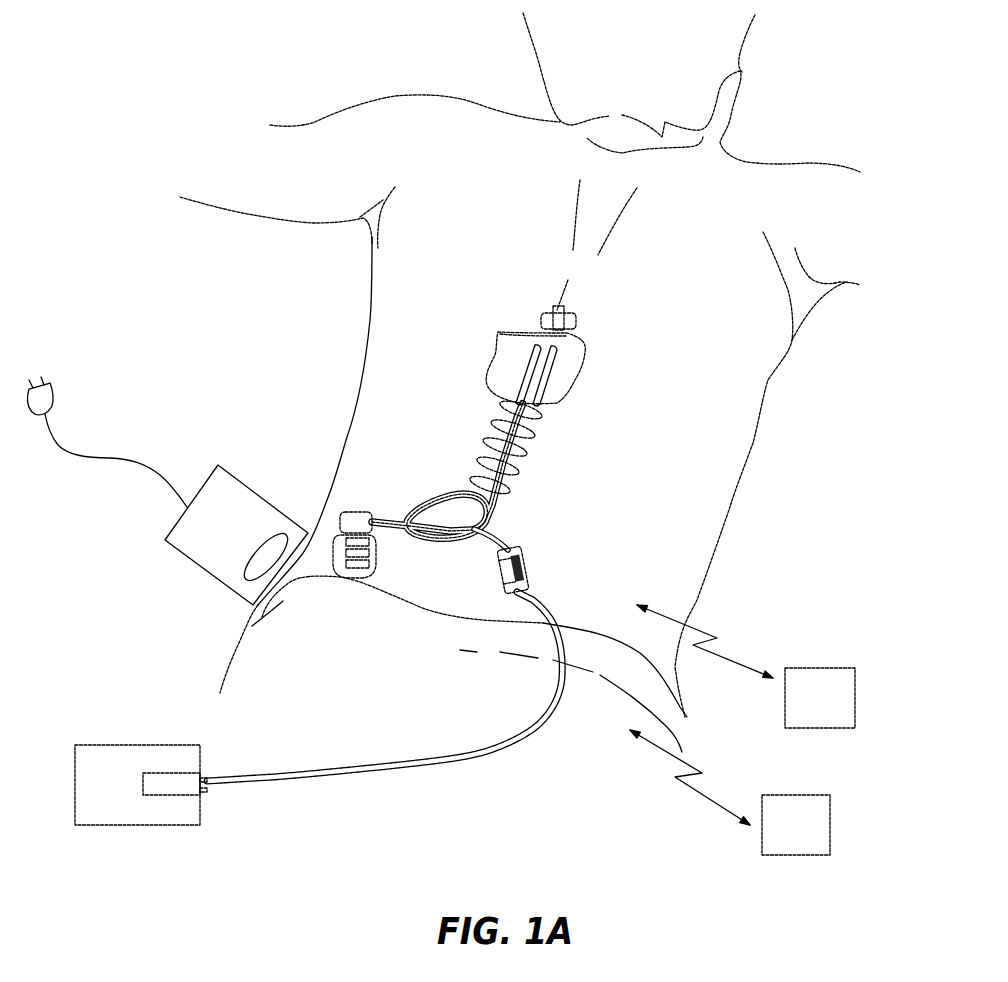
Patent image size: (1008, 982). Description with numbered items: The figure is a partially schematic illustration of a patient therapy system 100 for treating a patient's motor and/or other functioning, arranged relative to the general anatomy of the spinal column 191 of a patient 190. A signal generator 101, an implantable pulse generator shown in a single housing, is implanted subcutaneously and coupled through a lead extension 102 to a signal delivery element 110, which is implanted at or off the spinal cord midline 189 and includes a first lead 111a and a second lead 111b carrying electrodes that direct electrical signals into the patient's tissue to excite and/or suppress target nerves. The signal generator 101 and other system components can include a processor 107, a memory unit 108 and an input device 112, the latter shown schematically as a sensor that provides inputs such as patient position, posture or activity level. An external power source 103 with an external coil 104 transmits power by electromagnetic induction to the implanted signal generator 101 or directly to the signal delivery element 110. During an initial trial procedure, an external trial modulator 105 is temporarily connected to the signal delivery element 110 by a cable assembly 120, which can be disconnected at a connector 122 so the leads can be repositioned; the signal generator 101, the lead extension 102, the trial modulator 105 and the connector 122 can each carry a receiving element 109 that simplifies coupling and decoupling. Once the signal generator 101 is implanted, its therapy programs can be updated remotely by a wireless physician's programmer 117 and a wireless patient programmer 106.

The patient therapy system 100 is at (173, 372).
The signal generator 101 is at (373, 541).
The lead extension 102 is at (440, 490).
The external power source 103 is at (233, 473).
The external coil 104 is at (240, 572).
The trial modulator 105 is at (125, 745).
The wireless patient programmer 106 is at (823, 668).
The processor 107 is at (367, 563).
The memory unit 108 is at (383, 547).
The receiving element 109 is at (160, 775).
The signal delivery element 110 is at (486, 328).
The first lead 111a is at (527, 375).
The second lead 111b is at (543, 363).
The input device 112 is at (327, 553).
The wireless physician's programmer 117 is at (798, 795).
The cable assembly 120 is at (458, 768).
The connector 122 is at (530, 570).
The spinal cord midline 189 is at (568, 281).
The patient 190 is at (723, 492).
The spinal column 191 is at (534, 454).